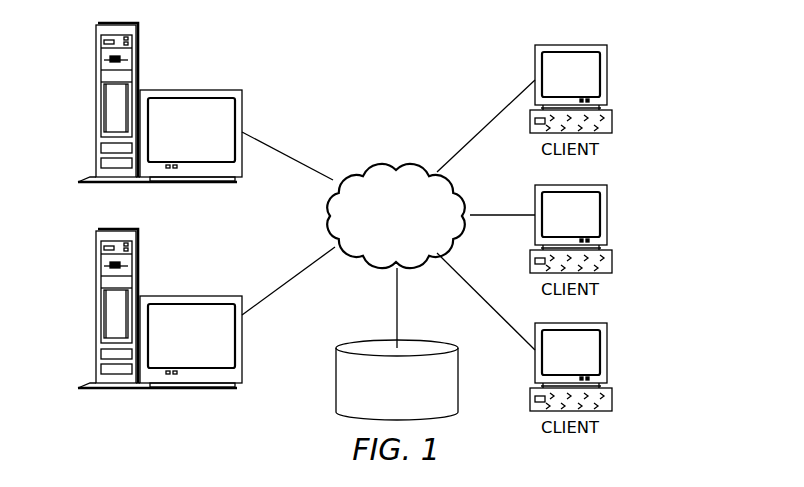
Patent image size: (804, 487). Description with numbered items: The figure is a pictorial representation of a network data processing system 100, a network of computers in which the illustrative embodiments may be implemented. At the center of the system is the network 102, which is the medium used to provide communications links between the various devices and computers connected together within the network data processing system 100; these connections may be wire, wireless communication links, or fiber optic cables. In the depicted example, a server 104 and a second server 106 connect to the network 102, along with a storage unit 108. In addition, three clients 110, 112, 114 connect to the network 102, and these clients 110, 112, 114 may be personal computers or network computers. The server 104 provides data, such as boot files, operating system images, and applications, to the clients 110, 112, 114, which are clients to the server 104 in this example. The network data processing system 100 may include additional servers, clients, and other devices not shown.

The network data processing system 100 is at (446, 64).
The network 102 is at (368, 165).
The server 104 is at (95, 105).
The server 106 is at (95, 311).
The storage unit 108 is at (334, 390).
The client 110 is at (607, 75).
The client 112 is at (607, 215).
The client 114 is at (607, 352).